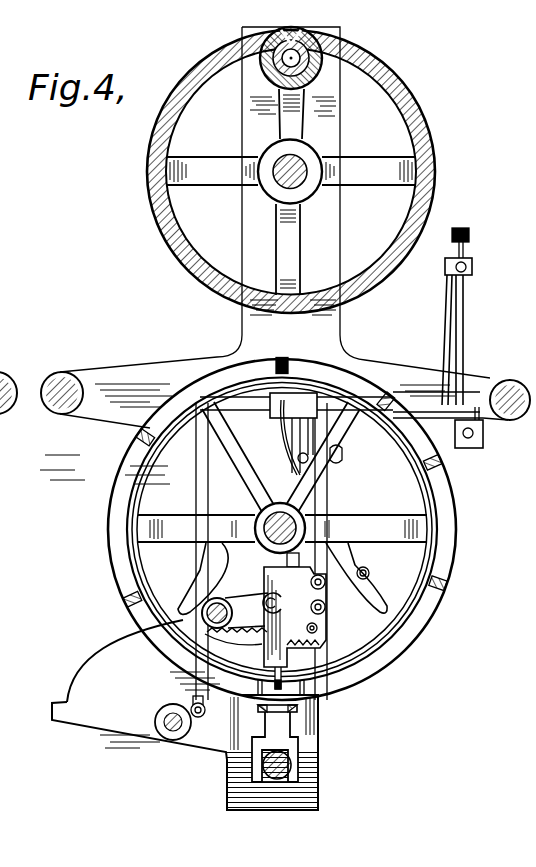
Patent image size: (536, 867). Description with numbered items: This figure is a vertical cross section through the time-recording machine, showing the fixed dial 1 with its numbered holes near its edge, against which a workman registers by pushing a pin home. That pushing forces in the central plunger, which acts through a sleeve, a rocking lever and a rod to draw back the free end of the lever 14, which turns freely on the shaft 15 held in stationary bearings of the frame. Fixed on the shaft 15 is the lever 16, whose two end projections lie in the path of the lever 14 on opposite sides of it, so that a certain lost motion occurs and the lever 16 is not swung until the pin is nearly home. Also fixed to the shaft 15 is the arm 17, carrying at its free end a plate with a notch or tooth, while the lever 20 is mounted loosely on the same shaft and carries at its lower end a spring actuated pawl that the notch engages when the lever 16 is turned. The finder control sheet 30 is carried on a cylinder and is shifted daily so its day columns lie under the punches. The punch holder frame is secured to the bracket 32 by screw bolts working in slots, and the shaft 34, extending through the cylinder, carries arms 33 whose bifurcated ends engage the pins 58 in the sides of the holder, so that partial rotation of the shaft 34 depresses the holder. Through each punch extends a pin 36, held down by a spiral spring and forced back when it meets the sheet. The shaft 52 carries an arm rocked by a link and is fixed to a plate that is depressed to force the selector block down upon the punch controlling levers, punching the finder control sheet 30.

The fixed dial 1 is at (431, 181).
The lever 14 is at (463, 301).
The shaft 15 is at (483, 432).
The lever 16 is at (447, 323).
The arm or lever 17 is at (340, 452).
The lever 20 is at (280, 430).
The finder control sheet 30 is at (129, 457).
The bracket 32 is at (230, 566).
The arms 33 is at (233, 597).
The shaft 34 is at (210, 630).
The pin 36 is at (290, 702).
The shaft 52 is at (330, 577).
The pins 58 is at (297, 588).